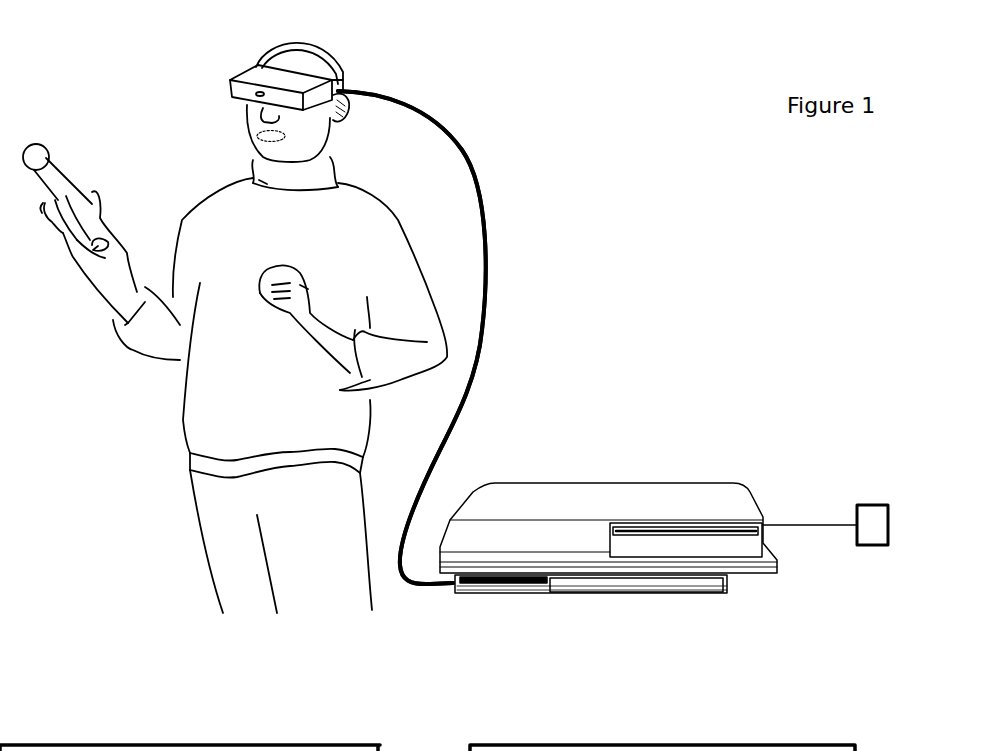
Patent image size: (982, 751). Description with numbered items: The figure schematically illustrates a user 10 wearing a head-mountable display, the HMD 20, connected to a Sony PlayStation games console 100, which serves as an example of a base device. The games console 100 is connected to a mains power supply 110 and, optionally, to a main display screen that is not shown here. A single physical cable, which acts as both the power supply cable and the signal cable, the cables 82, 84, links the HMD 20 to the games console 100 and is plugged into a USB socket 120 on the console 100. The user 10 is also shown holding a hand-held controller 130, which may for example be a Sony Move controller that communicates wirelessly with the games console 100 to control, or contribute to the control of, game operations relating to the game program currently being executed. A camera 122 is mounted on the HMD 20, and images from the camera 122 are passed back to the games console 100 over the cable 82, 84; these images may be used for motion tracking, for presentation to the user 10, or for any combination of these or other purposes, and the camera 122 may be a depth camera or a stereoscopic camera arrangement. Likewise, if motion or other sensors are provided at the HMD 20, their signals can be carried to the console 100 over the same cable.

The user 10 is at (197, 190).
The HMD 20 is at (280, 82).
The camera 122 is at (232, 88).
The hand-held controller 130 is at (57, 165).
The cable 82 is at (488, 308).
The cable 84 is at (412, 337).
The games console 100 is at (602, 482).
The mains power supply 110 is at (873, 503).
The USB socket 120 is at (481, 594).